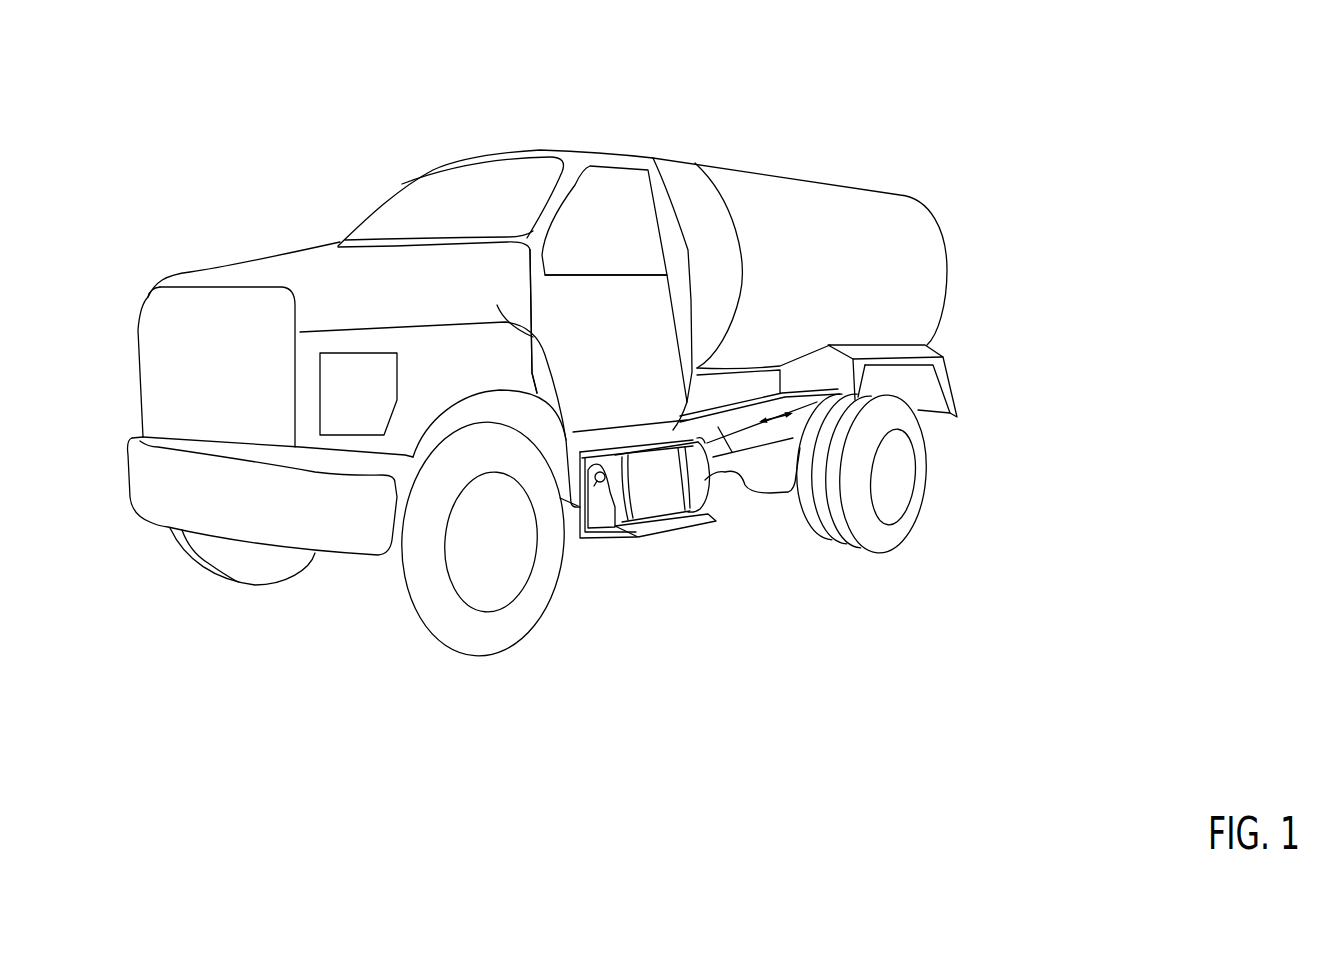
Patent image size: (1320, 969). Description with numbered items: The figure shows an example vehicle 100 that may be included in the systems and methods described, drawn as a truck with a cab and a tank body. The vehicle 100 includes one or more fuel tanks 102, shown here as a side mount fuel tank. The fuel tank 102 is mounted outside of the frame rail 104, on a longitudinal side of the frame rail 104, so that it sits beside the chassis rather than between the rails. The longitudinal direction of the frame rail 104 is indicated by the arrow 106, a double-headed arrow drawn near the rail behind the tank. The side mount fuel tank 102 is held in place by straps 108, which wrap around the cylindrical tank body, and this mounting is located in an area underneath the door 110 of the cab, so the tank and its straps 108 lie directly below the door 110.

The vehicle 100 is at (113, 71).
The fuel tank 102 is at (703, 490).
The frame rail 104 is at (732, 452).
The arrow 106 is at (776, 418).
The straps 108 is at (674, 457).
The door 110 is at (631, 342).